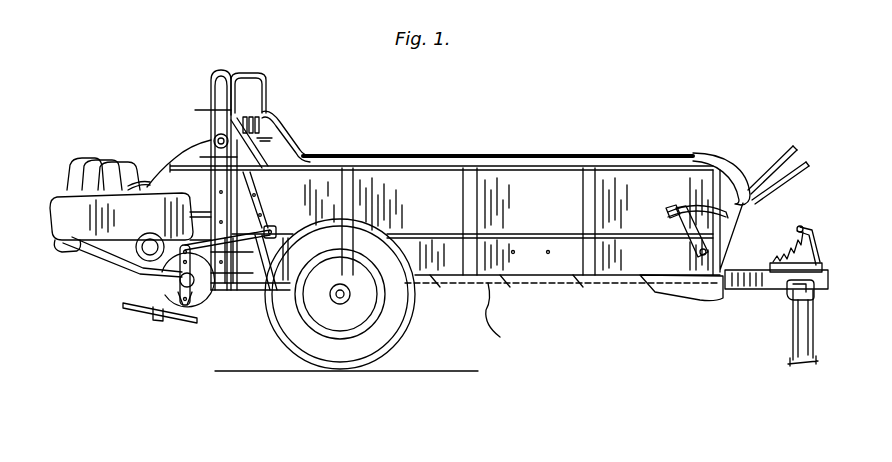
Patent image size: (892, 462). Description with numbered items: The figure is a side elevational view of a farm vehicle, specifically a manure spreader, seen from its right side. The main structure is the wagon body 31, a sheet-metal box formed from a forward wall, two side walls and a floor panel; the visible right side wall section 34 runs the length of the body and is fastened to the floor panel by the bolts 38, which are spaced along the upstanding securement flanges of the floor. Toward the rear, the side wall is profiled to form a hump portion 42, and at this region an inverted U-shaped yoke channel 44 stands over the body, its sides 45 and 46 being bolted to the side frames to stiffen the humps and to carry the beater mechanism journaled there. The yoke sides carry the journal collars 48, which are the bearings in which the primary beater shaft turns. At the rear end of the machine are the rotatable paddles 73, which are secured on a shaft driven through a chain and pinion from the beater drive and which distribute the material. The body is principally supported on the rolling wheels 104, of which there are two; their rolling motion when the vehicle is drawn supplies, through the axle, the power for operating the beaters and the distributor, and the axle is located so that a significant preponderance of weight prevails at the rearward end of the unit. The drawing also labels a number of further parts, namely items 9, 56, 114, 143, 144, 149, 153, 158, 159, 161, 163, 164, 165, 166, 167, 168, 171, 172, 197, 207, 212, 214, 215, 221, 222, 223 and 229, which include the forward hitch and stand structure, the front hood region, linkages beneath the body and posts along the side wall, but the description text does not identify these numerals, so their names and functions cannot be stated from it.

The section line 9- 9 is at (216, 129).
The wagon body 31 is at (565, 153).
The right side wall section 34 is at (413, 187).
The bolts 38 is at (513, 253).
The hump portion 42 is at (193, 133).
The inverted U-shaped yoke channel 44 is at (247, 72).
The yoke side 45 is at (264, 88).
The yoke side 46 is at (222, 207).
The journal collars 48 is at (211, 143).
The cylinder unit 56 is at (264, 118).
The rotatable paddles 73 is at (104, 158).
The rolling wheels 104 is at (387, 345).
The wheel axle 114 is at (333, 297).
The link 143 is at (180, 290).
The chain 144 is at (500, 340).
The disc 149 is at (200, 300).
The hood 153 is at (210, 205).
The frame bar 158 is at (255, 175).
The inclined tube 159 is at (250, 168).
The side panel rail 161 is at (530, 232).
The rear block 163 is at (700, 218).
The arcuate bracket 164 is at (682, 205).
The lever 165 is at (703, 250).
The rod 166 is at (758, 168).
The bracket 167 is at (280, 237).
The frame member 168 is at (232, 293).
The plate 171 is at (180, 272).
The member 172 is at (548, 253).
The step plate 197 is at (123, 305).
The bracket 207 is at (137, 313).
The rear deflector 212 is at (695, 292).
The tongue 214 is at (757, 292).
The rod 215 is at (816, 151).
The jack stand 221 is at (793, 343).
The clamp 222 is at (787, 297).
The lever 223 is at (803, 225).
The post 229 is at (347, 187).